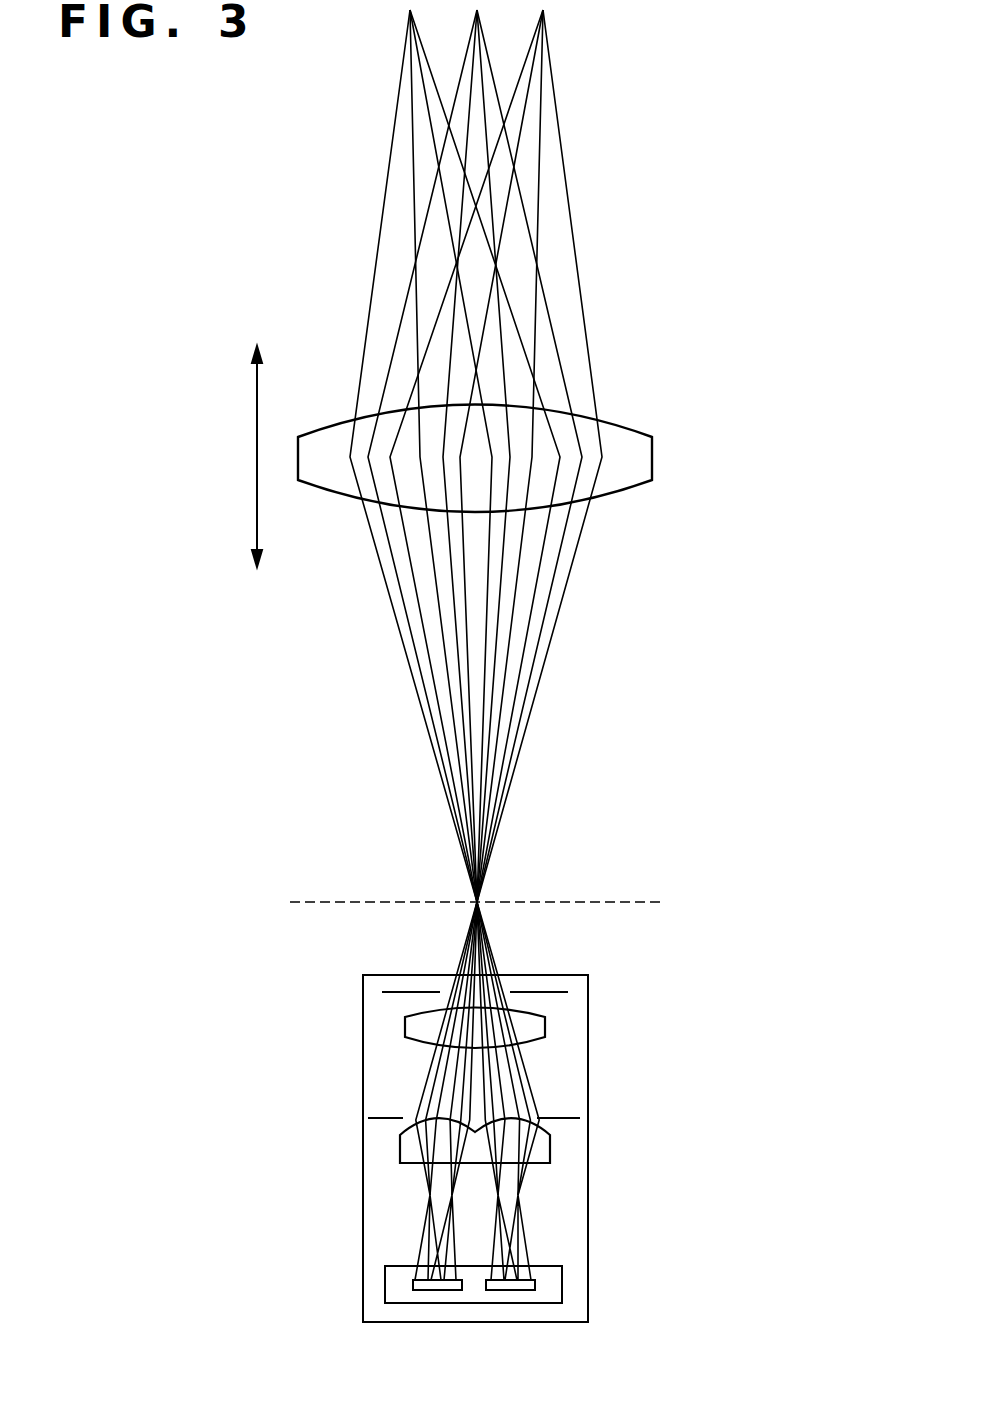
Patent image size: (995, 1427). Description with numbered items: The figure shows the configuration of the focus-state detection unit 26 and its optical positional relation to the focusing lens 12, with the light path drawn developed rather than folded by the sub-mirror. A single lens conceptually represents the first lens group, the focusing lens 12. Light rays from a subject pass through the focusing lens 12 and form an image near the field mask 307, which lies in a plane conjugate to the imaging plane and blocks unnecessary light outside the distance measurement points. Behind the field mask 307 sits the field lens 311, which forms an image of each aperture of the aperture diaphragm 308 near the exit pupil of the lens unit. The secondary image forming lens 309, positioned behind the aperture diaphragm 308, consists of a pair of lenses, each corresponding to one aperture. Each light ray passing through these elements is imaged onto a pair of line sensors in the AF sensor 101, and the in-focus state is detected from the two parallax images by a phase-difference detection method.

The focusing lens 12 is at (652, 458).
The focus-state detection unit 26 is at (363, 990).
The field mask 307 is at (568, 992).
The field lens 311 is at (545, 1025).
The aperture diaphragm 308 is at (580, 1118).
The secondary image forming lens 309 is at (550, 1157).
The AF sensor 101 is at (562, 1283).